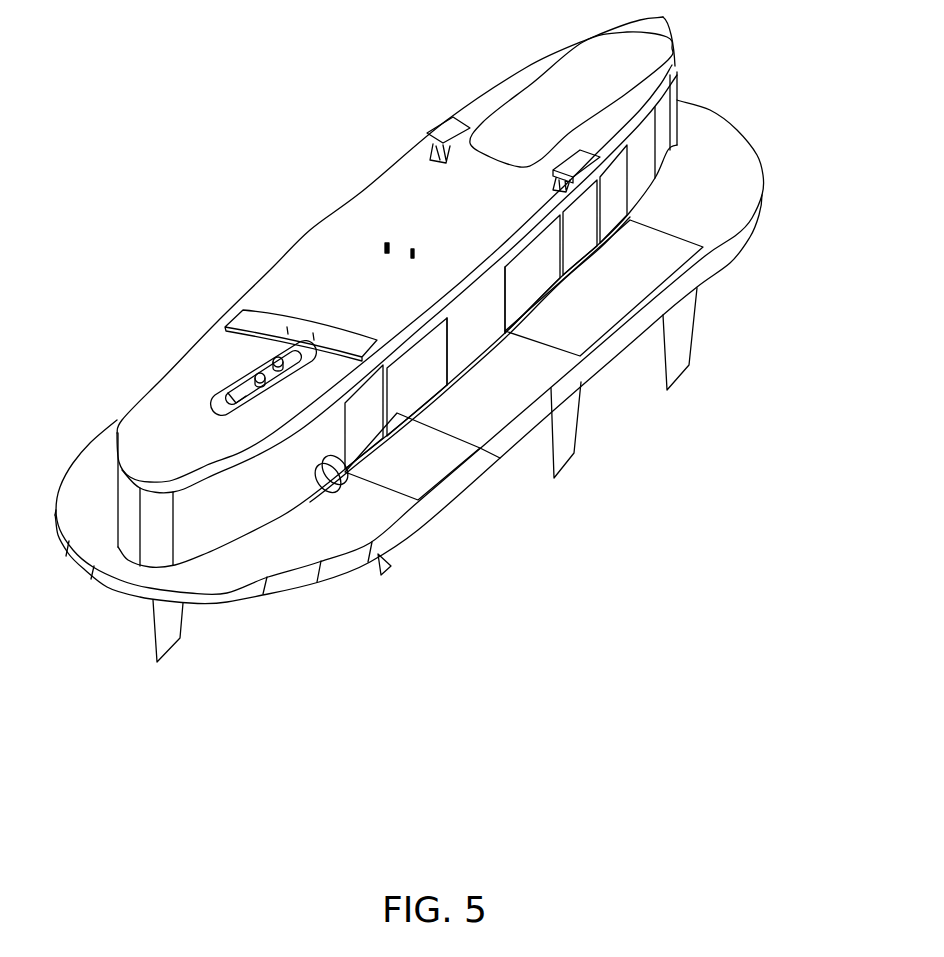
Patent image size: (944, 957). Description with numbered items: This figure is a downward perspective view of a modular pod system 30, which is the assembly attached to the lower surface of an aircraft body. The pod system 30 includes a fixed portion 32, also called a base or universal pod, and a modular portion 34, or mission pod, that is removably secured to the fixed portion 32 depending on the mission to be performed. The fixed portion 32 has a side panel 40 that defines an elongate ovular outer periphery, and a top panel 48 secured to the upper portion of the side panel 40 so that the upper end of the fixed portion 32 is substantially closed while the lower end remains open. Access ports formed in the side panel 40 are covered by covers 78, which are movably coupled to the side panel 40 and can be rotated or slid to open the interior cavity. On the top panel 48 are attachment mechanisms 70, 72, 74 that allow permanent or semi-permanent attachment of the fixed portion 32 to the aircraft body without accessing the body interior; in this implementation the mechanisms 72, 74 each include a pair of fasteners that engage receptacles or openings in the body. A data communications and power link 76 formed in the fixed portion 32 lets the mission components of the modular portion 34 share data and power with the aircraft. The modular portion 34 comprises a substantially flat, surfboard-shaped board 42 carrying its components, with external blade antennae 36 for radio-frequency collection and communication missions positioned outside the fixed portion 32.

The pod system 30 is at (202, 640).
The fixed portion 32 is at (688, 55).
The modular portion 34 is at (530, 290).
The blade antennae 36 is at (687, 340).
The side panel 40 is at (643, 188).
The board 42 is at (383, 518).
The top panel 48 is at (362, 218).
The attachment mechanism 70 is at (417, 148).
The attachment mechanism 72 is at (352, 250).
The attachment mechanism 74 is at (275, 300).
The data communications and power link 76 is at (222, 362).
The covers 78 is at (580, 322).